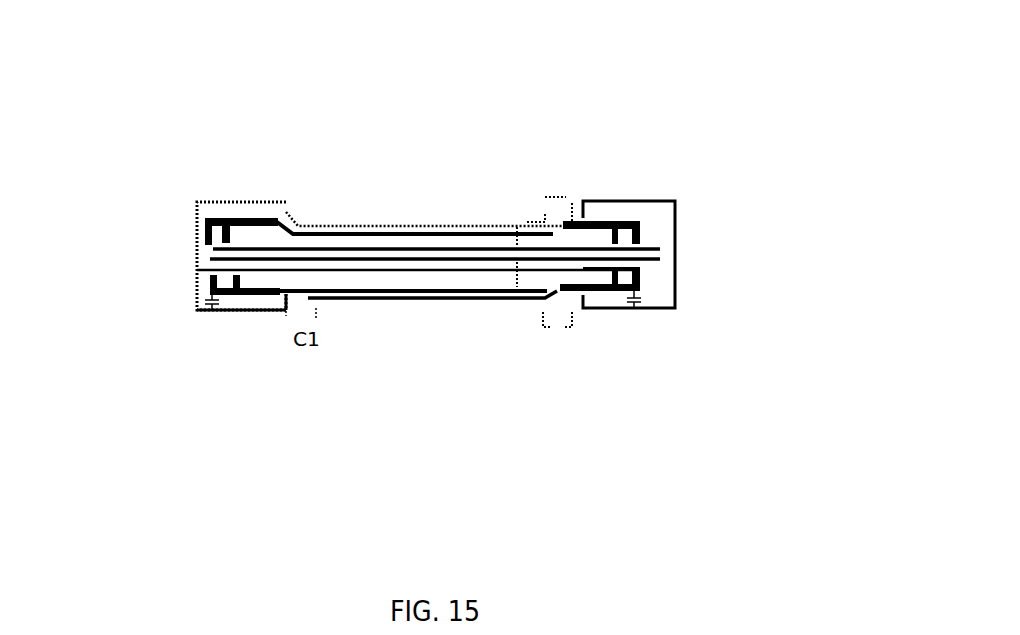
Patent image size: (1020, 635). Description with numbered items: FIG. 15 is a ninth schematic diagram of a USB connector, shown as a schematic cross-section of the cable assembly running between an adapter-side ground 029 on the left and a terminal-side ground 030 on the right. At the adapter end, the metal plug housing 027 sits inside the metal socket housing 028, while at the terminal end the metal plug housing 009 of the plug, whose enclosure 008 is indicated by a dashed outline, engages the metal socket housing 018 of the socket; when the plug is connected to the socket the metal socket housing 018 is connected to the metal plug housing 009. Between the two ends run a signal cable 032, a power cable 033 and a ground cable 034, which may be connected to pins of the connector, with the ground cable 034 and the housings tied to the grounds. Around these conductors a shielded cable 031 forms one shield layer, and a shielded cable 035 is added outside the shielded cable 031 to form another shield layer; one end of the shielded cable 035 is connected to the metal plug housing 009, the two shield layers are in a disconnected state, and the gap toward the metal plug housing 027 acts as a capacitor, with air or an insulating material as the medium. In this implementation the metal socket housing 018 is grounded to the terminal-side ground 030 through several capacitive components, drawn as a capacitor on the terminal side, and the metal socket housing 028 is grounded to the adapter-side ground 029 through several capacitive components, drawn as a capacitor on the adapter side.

The enclosure 008 is at (545, 197).
The metal housing 009 is at (588, 222).
The metal housing 018 is at (635, 222).
The metal housing 027 is at (279, 223).
The metal housing 028 is at (231, 224).
The adapter-side ground 029 is at (197, 258).
The terminal-side ground 030 is at (675, 256).
The shielded cable 031 is at (448, 234).
The signal cable 032 is at (400, 260).
The power cable 033 is at (428, 250).
The ground cable 034 is at (478, 271).
The shielded cable 035 is at (329, 298).